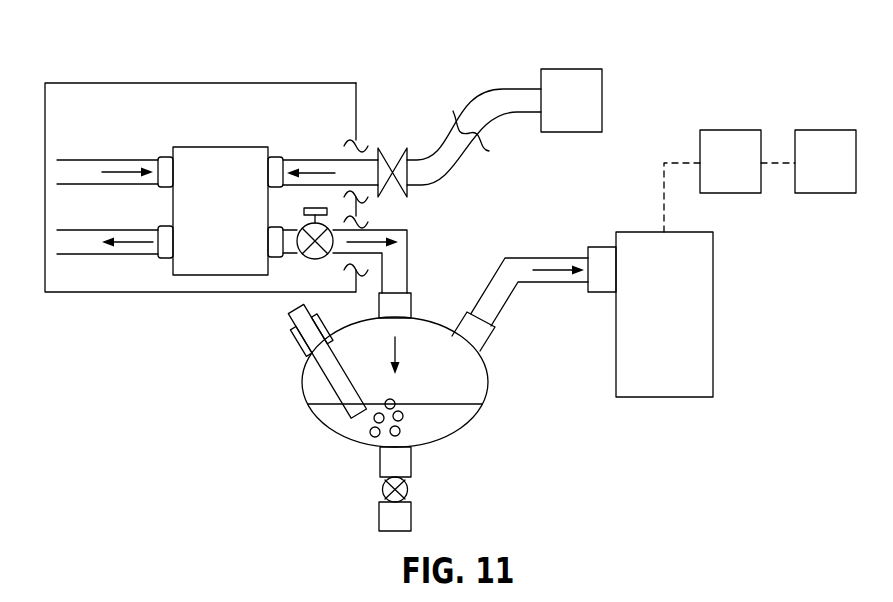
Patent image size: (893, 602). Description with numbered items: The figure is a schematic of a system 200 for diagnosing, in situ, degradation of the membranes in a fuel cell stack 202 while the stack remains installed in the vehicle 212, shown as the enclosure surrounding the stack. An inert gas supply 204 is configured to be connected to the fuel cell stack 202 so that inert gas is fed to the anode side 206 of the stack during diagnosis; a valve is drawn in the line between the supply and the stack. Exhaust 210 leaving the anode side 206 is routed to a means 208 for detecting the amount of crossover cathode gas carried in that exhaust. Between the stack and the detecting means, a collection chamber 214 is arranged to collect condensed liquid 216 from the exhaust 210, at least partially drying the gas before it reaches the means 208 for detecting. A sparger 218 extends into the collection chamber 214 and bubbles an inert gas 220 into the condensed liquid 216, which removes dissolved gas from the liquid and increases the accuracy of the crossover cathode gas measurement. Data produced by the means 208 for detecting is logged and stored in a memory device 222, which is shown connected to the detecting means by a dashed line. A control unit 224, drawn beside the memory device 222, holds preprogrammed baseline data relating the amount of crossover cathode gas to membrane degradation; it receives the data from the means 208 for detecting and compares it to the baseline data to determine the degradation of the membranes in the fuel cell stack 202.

The system 200 is at (654, 92).
The fuel cell stack 202 is at (206, 223).
The inert gas supply 204 is at (557, 114).
The anode side 206 is at (372, 167).
The means for detecting 208 is at (649, 326).
The exhaust 210 is at (395, 269).
The vehicle 212 is at (200, 83).
The collection chamber 214 is at (302, 380).
The condensed liquid 216 is at (435, 418).
The sparger 218 is at (289, 316).
The inert gas 220 is at (281, 304).
The memory device 222 is at (717, 173).
The control unit 224 is at (812, 173).